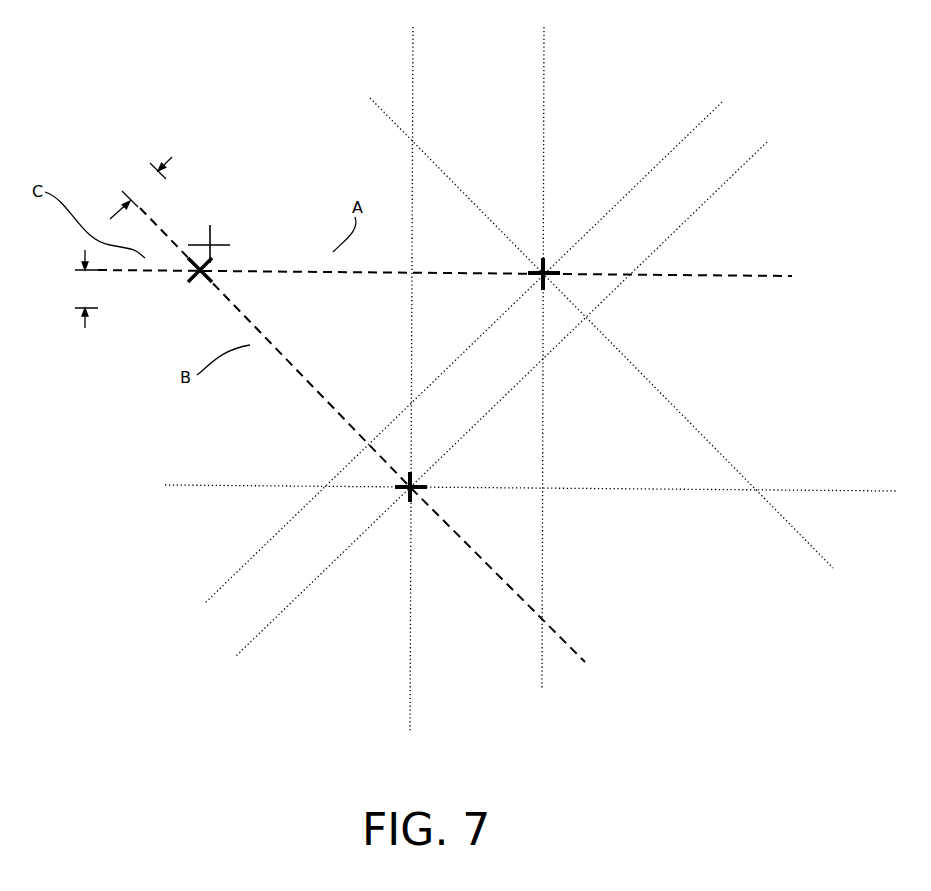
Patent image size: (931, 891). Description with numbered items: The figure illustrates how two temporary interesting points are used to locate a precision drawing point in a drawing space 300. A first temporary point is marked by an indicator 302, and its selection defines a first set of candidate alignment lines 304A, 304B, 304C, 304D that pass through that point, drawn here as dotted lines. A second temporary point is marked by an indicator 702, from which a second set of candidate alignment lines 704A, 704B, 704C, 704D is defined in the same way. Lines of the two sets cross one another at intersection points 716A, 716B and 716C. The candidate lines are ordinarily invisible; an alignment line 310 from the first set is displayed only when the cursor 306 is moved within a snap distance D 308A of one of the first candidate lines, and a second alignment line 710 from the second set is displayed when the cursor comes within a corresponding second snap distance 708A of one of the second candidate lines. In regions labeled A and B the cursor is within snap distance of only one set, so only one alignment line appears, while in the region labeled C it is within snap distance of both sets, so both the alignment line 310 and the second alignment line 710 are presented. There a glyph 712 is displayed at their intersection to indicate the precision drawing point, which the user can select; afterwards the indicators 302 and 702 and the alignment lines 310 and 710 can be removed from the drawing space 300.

The drawing space 300 is at (690, 63).
The indicator 302 is at (400, 493).
The candidate alignment line 304A is at (413, 72).
The candidate alignment line 304B is at (558, 347).
The candidate alignment line 304C is at (560, 490).
The candidate alignment line 304D is at (572, 647).
The cursor 306 is at (220, 245).
The snap distance D 308A is at (137, 172).
The alignment line 310 is at (388, 435).
The indicator for the second temporary point 702 is at (538, 267).
The candidate alignment line 704A is at (544, 83).
The candidate alignment line 704B is at (642, 180).
The candidate alignment line 704C is at (743, 276).
The candidate alignment line 704D is at (805, 538).
The snap distance D2 708A is at (98, 295).
The second alignment line 710 is at (450, 311).
The indicator 712 is at (198, 280).
The intersection point 716A is at (207, 272).
The intersection point 716B is at (411, 274).
The intersection point 716C is at (410, 402).